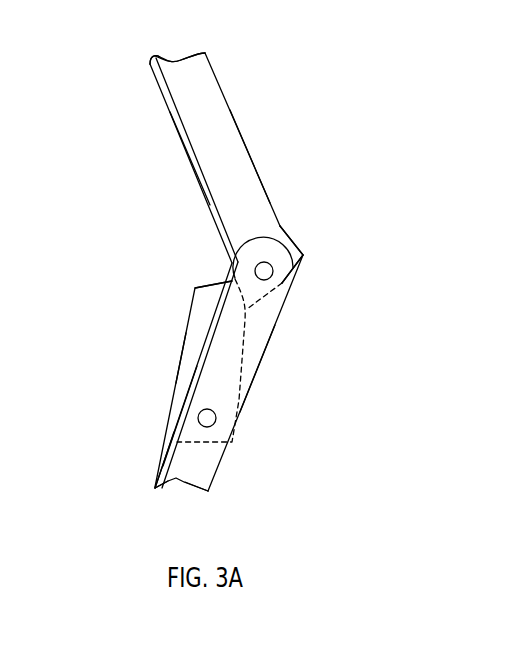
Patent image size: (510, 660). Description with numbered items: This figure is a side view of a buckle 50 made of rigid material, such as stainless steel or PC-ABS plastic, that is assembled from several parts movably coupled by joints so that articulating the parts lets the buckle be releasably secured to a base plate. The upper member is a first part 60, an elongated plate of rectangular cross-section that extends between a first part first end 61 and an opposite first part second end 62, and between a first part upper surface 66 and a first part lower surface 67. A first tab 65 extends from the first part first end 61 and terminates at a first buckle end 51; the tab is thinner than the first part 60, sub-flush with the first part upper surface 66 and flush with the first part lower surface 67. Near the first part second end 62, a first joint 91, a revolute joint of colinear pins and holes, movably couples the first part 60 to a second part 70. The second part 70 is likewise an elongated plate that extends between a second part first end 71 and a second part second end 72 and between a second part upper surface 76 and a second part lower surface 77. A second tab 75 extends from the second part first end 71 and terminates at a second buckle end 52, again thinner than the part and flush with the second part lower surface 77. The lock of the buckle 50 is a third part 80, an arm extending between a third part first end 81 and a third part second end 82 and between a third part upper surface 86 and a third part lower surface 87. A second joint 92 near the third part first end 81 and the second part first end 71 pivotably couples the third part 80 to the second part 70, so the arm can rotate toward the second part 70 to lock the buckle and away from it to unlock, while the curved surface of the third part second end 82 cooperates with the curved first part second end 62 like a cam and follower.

The buckle 50 is at (218, 269).
The first buckle end 51 is at (147, 40).
The second buckle end 52 is at (147, 507).
The first part 60 is at (213, 167).
The first part first end 61 is at (193, 40).
The first part second end 62 is at (276, 313).
The first tab 65 is at (152, 62).
The first part upper surface 66 is at (256, 142).
The first part lower surface 67 is at (168, 151).
The second part 70 is at (196, 396).
The second part first end 71 is at (198, 507).
The second part second end 72 is at (276, 316).
The second tab 75 is at (151, 489).
The second part upper surface 76 is at (317, 271).
The second part lower surface 77 is at (142, 458).
The third part 80 is at (199, 363).
The third part first end 81 is at (211, 462).
The third part second end 82 is at (210, 272).
The third part upper surface 86 is at (264, 337).
The third part lower surface 87 is at (163, 388).
The first joint 91 is at (265, 262).
The second joint 92 is at (213, 411).